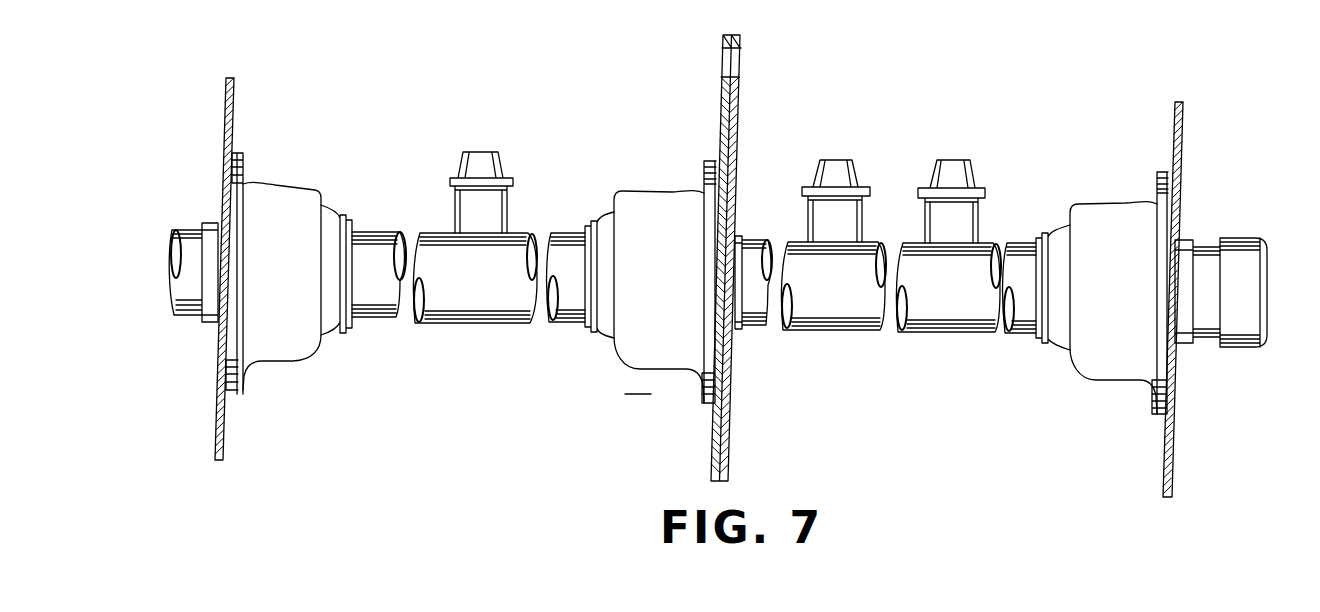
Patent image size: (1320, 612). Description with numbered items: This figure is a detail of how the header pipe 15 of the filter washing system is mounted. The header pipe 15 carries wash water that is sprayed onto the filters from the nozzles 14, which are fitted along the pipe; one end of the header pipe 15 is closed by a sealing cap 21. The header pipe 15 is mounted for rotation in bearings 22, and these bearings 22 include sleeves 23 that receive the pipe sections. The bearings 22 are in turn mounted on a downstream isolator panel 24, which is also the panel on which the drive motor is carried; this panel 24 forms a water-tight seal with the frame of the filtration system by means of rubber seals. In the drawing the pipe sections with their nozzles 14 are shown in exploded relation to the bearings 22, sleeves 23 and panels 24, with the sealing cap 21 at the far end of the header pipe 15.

The nozzle 14 is at (852, 220).
The header pipe 15 is at (463, 305).
The sealing cap 21 is at (1230, 247).
The bearings 22 is at (290, 193).
The sleeves 23 is at (208, 223).
The downstream isolator panel 24 is at (227, 128).